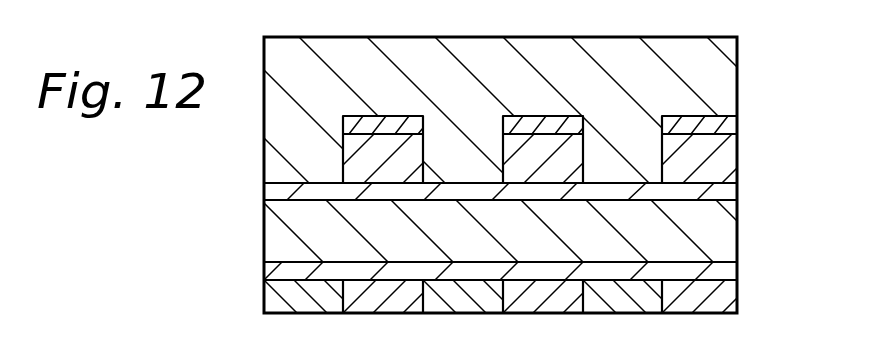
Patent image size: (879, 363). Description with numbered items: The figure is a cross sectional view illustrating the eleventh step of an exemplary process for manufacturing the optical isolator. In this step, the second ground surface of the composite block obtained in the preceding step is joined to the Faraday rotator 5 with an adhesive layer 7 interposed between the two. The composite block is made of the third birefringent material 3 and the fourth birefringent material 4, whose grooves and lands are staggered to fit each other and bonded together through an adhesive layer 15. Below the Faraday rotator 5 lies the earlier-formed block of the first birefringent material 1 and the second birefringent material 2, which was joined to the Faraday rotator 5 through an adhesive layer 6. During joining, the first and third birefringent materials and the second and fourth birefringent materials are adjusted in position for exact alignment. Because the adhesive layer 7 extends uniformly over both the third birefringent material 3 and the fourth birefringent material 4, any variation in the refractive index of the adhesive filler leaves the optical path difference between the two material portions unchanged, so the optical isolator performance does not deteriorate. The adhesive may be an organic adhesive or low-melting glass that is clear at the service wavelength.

The first birefringent material 1 is at (648, 305).
The second birefringent material 2 is at (722, 287).
The third birefringent material 3 is at (717, 72).
The fourth birefringent material 4 is at (720, 153).
The Faraday rotator 5 is at (720, 234).
The adhesive layer 6 is at (725, 270).
The adhesive layer 7 is at (730, 192).
The adhesive layer 15 is at (738, 118).